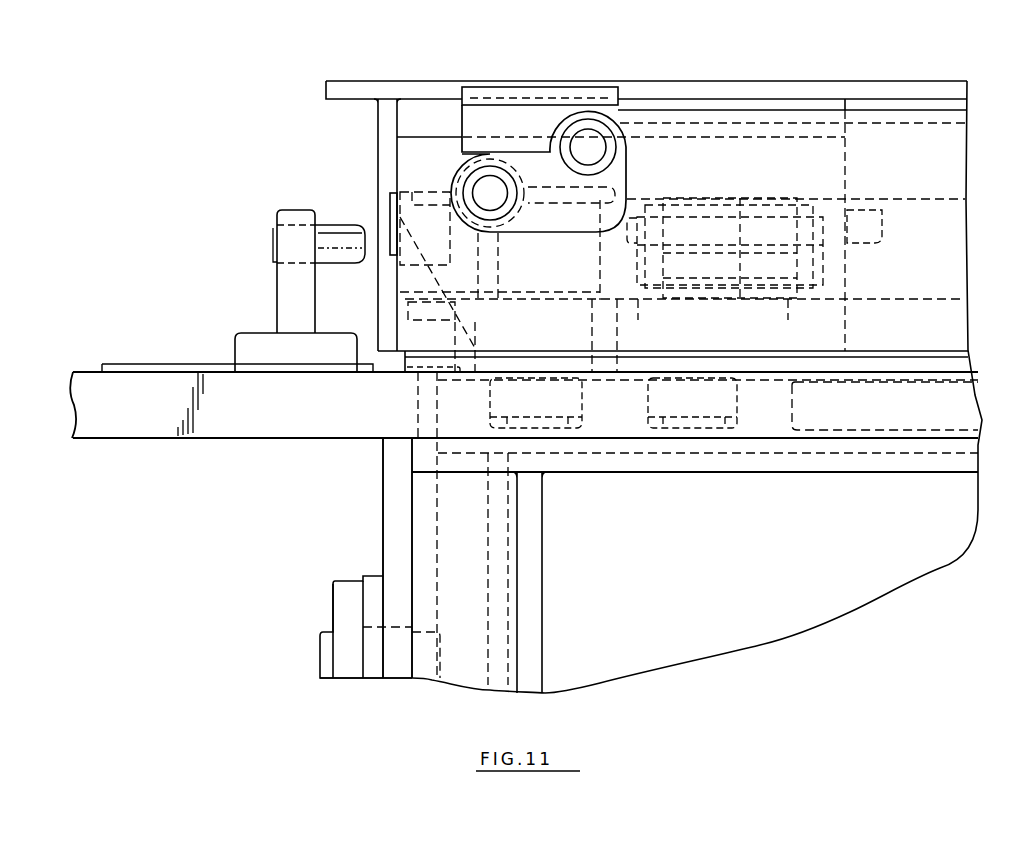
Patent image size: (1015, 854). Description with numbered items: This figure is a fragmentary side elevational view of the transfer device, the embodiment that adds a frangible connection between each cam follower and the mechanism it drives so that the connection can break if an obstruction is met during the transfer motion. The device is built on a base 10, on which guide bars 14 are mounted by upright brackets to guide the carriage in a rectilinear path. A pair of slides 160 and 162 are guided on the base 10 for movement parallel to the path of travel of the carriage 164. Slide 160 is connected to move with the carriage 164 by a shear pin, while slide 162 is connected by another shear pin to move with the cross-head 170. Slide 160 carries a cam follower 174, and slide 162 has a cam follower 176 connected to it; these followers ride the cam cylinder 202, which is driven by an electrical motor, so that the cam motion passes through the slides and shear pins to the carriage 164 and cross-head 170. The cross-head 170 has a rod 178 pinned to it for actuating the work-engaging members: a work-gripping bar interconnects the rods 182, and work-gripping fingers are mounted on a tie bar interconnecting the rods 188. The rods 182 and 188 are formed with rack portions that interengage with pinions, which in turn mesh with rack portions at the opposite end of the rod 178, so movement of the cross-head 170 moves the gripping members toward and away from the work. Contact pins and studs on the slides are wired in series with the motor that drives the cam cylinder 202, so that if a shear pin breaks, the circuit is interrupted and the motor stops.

The base 10 is at (199, 359).
The guide bars 14 is at (343, 234).
The slide 160 is at (682, 323).
The slide 162 is at (681, 335).
The carriage 164 is at (680, 92).
The cross-head 170 is at (736, 202).
The cam follower 174 is at (533, 406).
The cam follower 176 is at (712, 404).
The rod 178 is at (866, 222).
The rods 182 is at (495, 197).
The rods 188 is at (596, 150).
The cam cylinder 202 is at (866, 428).